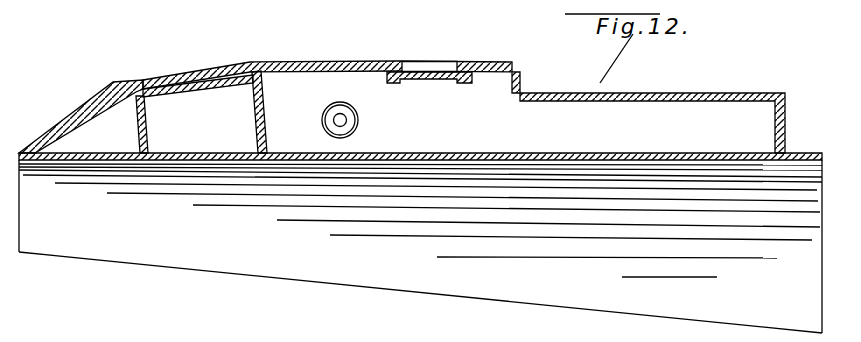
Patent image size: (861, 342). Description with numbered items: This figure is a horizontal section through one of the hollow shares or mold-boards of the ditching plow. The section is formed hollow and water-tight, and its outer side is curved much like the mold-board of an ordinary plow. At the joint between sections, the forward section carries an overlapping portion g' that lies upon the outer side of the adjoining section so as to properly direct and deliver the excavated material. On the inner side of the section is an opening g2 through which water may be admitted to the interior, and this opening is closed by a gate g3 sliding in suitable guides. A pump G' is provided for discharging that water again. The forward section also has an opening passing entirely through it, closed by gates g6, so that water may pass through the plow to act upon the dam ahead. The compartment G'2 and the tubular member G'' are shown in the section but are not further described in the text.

The overlapping portion g' is at (420, 150).
The pump G' is at (464, 107).
The front compartment G'2 is at (143, 112).
The gates g6 is at (207, 86).
The opening g2 is at (429, 57).
The gate g3 is at (429, 87).
The tube G'' is at (352, 120).